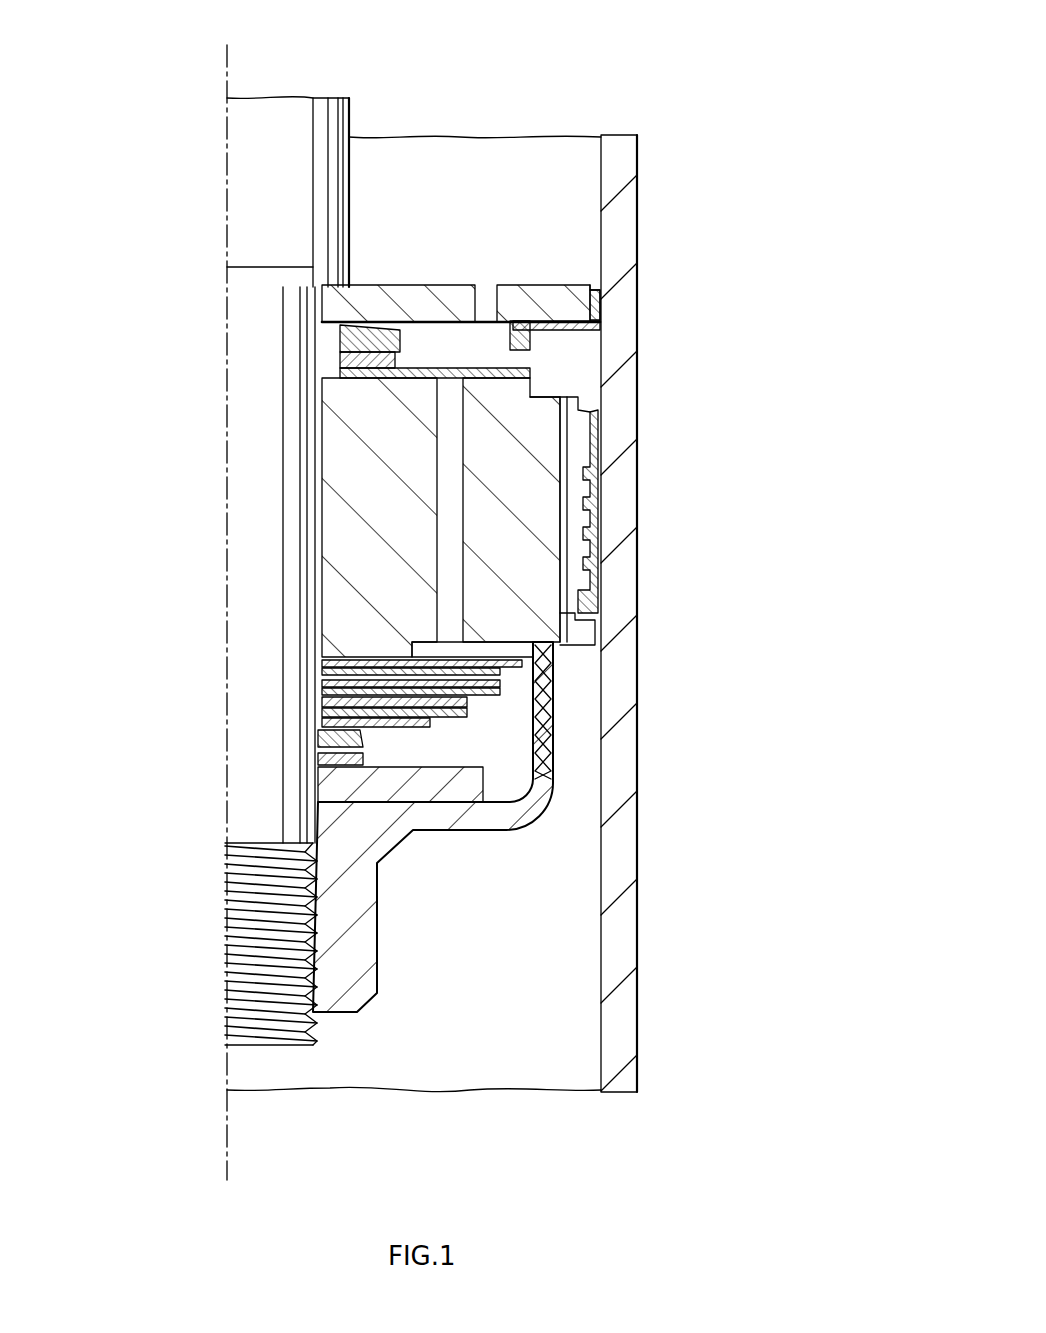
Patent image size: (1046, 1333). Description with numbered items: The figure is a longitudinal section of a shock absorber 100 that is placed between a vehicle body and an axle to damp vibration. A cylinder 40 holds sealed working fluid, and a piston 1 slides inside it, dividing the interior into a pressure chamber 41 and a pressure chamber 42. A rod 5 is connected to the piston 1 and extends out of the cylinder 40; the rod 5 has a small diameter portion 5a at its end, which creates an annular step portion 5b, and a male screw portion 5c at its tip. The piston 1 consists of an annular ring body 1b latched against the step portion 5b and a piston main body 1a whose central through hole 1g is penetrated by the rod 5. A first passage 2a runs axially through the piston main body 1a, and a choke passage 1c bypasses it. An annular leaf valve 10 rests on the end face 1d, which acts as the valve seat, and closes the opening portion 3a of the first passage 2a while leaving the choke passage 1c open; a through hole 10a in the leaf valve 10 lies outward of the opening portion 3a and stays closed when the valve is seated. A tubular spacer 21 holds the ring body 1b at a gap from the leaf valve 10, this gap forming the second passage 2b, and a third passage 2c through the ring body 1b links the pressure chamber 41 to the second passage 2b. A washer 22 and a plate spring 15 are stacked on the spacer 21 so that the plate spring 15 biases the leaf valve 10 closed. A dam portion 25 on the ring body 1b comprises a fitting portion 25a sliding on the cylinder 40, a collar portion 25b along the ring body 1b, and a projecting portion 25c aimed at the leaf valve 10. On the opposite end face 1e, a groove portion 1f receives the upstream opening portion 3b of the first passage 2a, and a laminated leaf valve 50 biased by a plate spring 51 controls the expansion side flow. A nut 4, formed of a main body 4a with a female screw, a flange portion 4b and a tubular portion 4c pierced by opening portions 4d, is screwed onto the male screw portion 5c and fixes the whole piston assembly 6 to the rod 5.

The shock absorber 100 is at (657, 107).
The pressure chamber 41 is at (578, 163).
The pressure chamber 42 is at (525, 1027).
The cylinder 40 is at (617, 1037).
The piston 1 is at (600, 541).
The piston main body 1a is at (582, 502).
The ring body 1b is at (555, 300).
The choke passage 1c is at (568, 594).
The end face 1d is at (576, 432).
The end face 1e is at (475, 595).
The groove portion 1f is at (560, 647).
The through hole 1g is at (437, 442).
The first passage 2a is at (440, 548).
The second passage 2b is at (505, 358).
The third passage 2c is at (485, 297).
The opening portion 3a is at (460, 380).
The opening portion 3b is at (565, 582).
The nut 4 is at (342, 1015).
The main body 4a is at (358, 932).
The flange portion 4b is at (480, 832).
The tubular portion 4c is at (482, 778).
The opening portions 4d is at (548, 708).
The rod 5 is at (237, 167).
The small diameter portion 5a is at (240, 699).
The step portion 5b is at (316, 282).
The male screw portion 5c is at (232, 975).
The piston assembly 6 is at (605, 625).
The leaf valve 10 is at (556, 400).
The through hole 10a is at (500, 395).
The plate spring 15 is at (393, 345).
The spacer 21 is at (345, 340).
The washer 22 is at (345, 356).
The dam portion 25 is at (603, 328).
The fitting portion 25a is at (605, 302).
The collar portion 25b is at (530, 337).
The projecting portion 25c is at (562, 340).
The laminated leaf valve 50 is at (506, 692).
The plate spring 51 is at (345, 750).